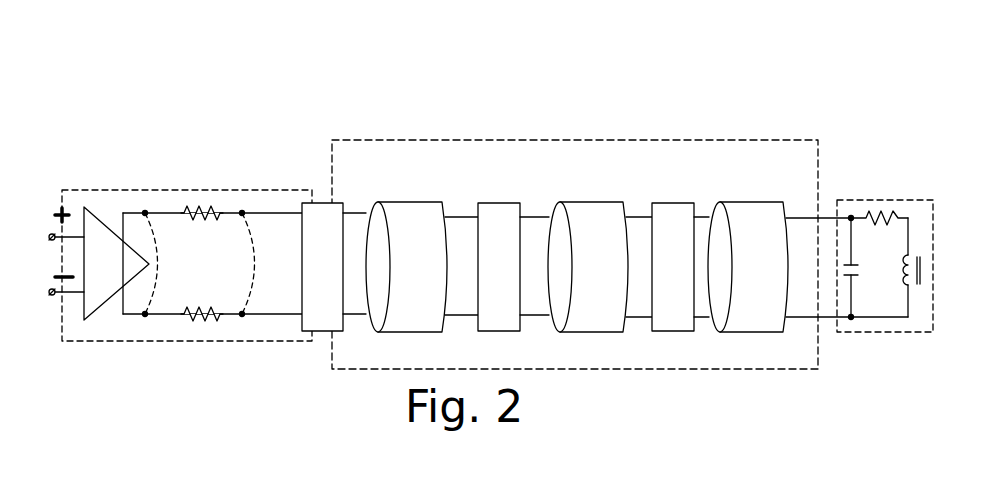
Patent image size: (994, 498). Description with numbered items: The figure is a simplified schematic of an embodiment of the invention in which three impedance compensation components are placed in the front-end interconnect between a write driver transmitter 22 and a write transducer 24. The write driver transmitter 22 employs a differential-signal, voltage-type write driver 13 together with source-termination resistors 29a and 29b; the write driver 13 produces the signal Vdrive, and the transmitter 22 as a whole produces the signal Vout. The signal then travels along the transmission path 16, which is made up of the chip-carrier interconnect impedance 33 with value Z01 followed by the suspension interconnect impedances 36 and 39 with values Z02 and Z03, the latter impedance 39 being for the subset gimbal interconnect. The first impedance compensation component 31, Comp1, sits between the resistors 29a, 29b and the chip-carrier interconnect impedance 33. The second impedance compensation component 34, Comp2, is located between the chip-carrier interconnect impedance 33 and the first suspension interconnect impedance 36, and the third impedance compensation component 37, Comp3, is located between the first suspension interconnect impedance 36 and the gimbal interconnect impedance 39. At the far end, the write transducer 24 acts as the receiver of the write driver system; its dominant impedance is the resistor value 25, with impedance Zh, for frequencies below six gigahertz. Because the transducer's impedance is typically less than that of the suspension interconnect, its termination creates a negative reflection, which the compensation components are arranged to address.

The write driver 13 is at (97, 225).
The transmission path 16 is at (427, 138).
The write driver transmitter 22 is at (98, 344).
The write transducer 24 is at (875, 333).
The resistor value 25 is at (886, 213).
The source-termination resistor 29a is at (183, 203).
The source-termination resistor 29b is at (188, 320).
The first impedance compensation component 31 is at (323, 200).
The chip-carrier interconnect impedance 33 is at (403, 200).
The second impedance compensation component 34 is at (500, 207).
The first suspension interconnect impedance 36 is at (585, 205).
The third impedance compensation component 37 is at (672, 207).
The gimbal interconnect impedance 39 is at (742, 207).